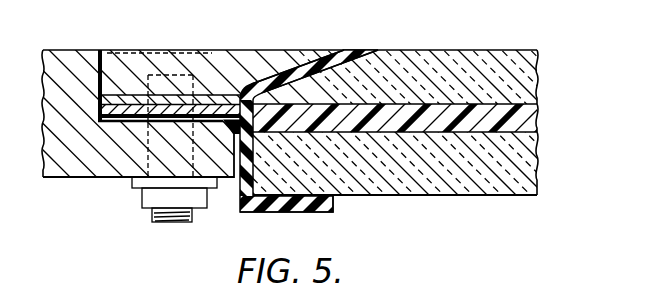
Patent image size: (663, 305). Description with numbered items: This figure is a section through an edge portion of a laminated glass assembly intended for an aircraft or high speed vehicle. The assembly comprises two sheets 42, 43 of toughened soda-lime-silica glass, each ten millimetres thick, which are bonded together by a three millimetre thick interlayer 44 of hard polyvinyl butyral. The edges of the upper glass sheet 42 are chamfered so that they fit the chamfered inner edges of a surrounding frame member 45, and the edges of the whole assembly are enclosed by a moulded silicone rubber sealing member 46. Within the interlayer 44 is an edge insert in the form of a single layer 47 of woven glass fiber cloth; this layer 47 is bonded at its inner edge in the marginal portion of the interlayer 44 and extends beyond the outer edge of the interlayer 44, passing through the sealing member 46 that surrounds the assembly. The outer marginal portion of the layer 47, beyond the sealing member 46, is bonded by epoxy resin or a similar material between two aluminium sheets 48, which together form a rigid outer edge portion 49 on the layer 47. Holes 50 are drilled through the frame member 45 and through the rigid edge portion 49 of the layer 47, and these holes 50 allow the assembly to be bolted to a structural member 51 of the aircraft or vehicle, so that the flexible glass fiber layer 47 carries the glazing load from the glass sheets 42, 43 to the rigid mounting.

The glass sheet 42 is at (539, 64).
The glass sheet 43 is at (539, 164).
The interlayer 44 is at (527, 121).
The frame member 45 is at (267, 54).
The sealing member 46 is at (280, 207).
The layer of woven glass fiber cloth 47 is at (353, 118).
The aluminium sheets 48 is at (135, 100).
The rigid outer edge portion 49 is at (207, 93).
The holes 50 is at (143, 78).
The structural member 51 is at (72, 162).